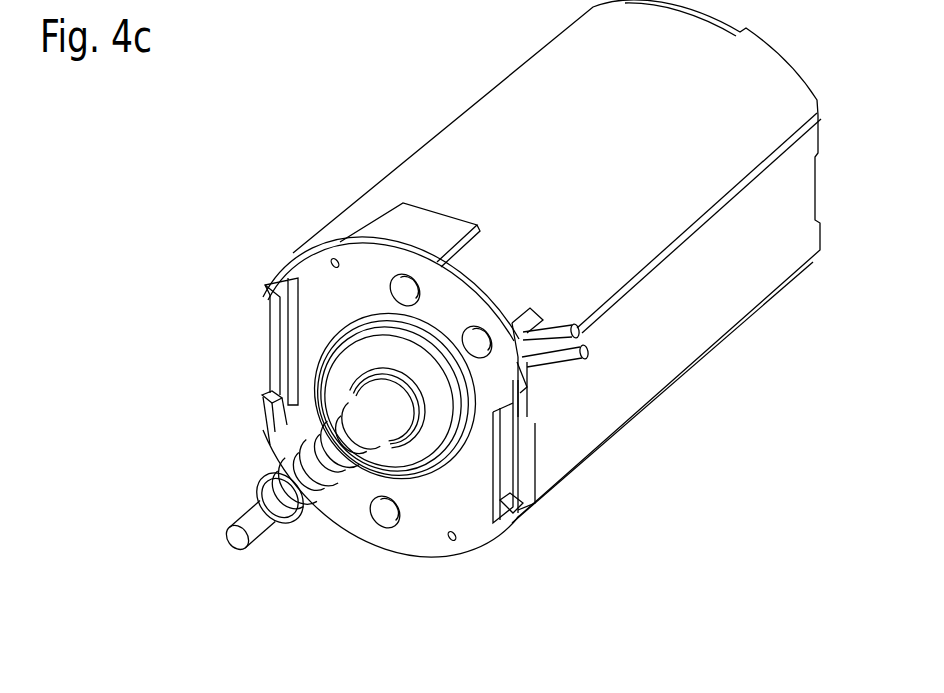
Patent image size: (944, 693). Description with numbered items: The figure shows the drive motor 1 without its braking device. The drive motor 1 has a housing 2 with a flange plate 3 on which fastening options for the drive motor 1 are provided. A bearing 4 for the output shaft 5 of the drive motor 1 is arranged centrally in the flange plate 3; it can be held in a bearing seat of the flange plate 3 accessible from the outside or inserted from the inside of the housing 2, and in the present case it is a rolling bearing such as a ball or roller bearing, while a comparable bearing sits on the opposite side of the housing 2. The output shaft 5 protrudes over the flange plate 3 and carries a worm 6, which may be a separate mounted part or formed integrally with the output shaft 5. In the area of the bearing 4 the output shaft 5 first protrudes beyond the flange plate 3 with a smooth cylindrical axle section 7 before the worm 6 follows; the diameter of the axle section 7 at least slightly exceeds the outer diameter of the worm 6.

The drive motor 1 is at (435, 87).
The housing 2 is at (763, 77).
The flange plate 3 is at (323, 277).
The bearing 4 is at (433, 445).
The output shaft 5 is at (257, 530).
The worm 6 is at (283, 462).
The axle section 7 is at (403, 412).